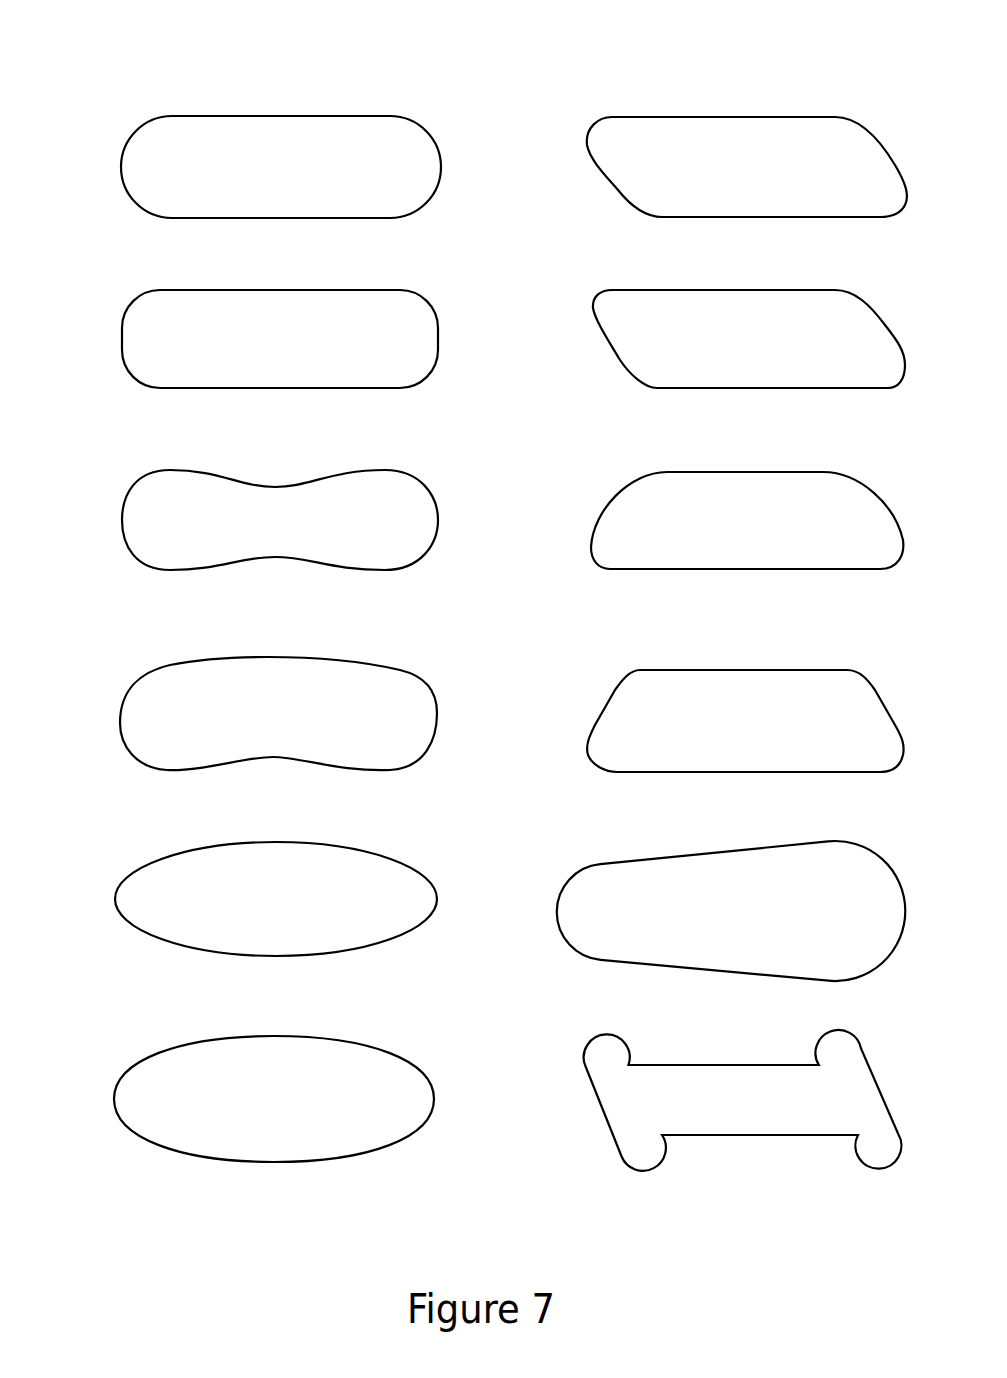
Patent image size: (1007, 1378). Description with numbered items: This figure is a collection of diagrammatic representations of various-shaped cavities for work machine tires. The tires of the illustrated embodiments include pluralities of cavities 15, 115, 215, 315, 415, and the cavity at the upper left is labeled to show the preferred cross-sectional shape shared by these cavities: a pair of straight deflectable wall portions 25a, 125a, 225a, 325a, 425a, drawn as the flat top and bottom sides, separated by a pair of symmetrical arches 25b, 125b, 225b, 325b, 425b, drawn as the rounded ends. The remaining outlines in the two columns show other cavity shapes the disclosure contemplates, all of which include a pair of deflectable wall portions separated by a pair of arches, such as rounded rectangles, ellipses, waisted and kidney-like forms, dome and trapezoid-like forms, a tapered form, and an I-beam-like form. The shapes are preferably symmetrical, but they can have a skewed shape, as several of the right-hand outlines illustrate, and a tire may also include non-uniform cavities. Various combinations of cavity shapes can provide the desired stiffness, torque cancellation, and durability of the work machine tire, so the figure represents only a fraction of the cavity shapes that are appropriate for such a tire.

The cavity 15 is at (279, 139).
The cavity 115 is at (279, 139).
The cavity 215 is at (279, 139).
The cavity 315 is at (279, 139).
The cavity 415 is at (97, 126).
The straight deflectable wall portion 25a is at (349, 93).
The straight deflectable wall portion 125a is at (349, 93).
The straight deflectable wall portion 225a is at (349, 93).
The straight deflectable wall portion 325a is at (349, 93).
The straight deflectable wall portion 425a is at (194, 116).
The symmetrical arch 25b is at (251, 188).
The symmetrical arch 125b is at (251, 188).
The symmetrical arch 225b is at (251, 188).
The symmetrical arch 325b is at (251, 188).
The symmetrical arch 425b is at (440, 172).